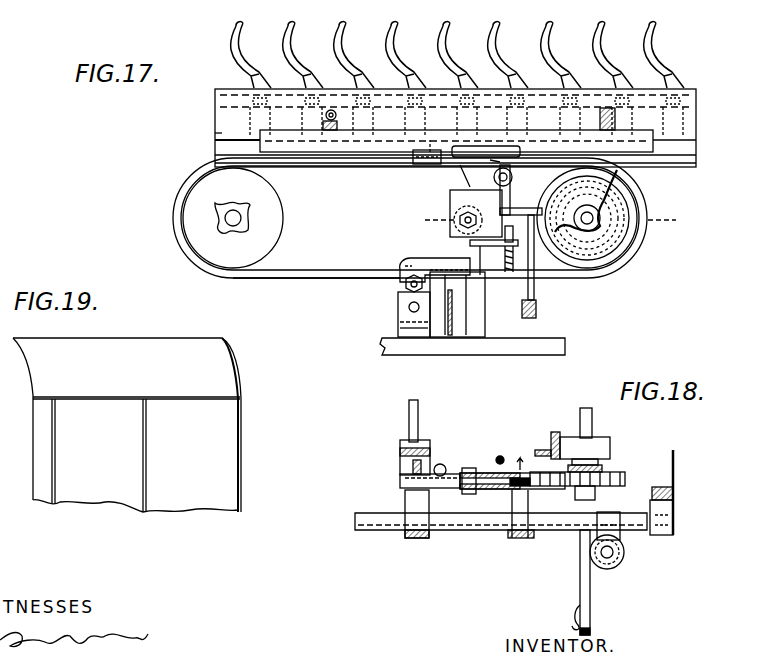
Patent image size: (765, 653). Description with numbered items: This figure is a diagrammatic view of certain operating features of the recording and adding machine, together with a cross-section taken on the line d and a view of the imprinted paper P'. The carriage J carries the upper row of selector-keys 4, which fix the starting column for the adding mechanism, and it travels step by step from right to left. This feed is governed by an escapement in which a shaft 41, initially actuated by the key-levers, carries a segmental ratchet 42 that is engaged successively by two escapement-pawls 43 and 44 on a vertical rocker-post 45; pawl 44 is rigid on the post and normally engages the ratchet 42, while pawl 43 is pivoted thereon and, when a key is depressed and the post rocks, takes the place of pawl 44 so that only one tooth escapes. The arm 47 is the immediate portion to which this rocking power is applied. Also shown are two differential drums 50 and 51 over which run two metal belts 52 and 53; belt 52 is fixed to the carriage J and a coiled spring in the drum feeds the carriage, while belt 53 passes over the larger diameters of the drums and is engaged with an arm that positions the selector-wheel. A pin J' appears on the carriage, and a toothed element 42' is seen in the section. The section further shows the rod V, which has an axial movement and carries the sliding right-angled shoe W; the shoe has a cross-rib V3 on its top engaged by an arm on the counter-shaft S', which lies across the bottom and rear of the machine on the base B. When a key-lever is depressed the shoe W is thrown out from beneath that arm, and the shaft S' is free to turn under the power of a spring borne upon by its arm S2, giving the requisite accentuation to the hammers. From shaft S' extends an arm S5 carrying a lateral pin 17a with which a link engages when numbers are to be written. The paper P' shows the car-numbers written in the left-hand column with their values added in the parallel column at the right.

In FIG. 17, the selector-keys 4 is at (237, 48).
In FIG. 17, the carriage J is at (205, 138).
In FIG. 17, the pin on frame J' is at (340, 121).
In FIG. 17, the metal belt 52 is at (418, 168).
In FIG. 17, the metal belt 53 is at (316, 291).
In FIG. 17, the differential drum 51 is at (292, 226).
In FIG. 17, the section line d is at (549, 220).
In FIG. 17, the segmental ratchet 42 is at (607, 218).
In FIG. 17, the shaft 41 is at (600, 228).
In FIG. 18, the shaft 41 is at (592, 420).
In FIG. 17, the differential drum 50 is at (630, 258).
In FIG. 17, the escapement-pawl 44 is at (496, 201).
In FIG. 17, the escapement-pawl 43 is at (510, 185).
In FIG. 18, the escapement-pawl 43 is at (521, 466).
In FIG. 17, the vertical rocker-post 45 is at (470, 248).
In FIG. 18, the vertical rocker-post 45 is at (482, 472).
In FIG. 17, the arm 47 is at (436, 275).
In FIG. 18, the arm 47 is at (432, 484).
In FIG. 17, the rod V is at (408, 310).
In FIG. 18, the rod V is at (420, 405).
In FIG. 17, the sliding right-angled shoe W is at (398, 324).
In FIG. 18, the sliding right-angled shoe W is at (400, 450).
In FIG. 17, the base B is at (566, 346).
In FIG. 18, the base B is at (656, 492).
In FIG. 19, the paper P' is at (129, 420).
In FIG. 18, the counter-shaft S' is at (501, 524).
In FIG. 18, the cross-rib V3 is at (400, 478).
In FIG. 18, the gear 42' is at (577, 488).
In FIG. 18, the arm S2 is at (625, 550).
In FIG. 18, the arm S5 is at (578, 573).
In FIG. 18, the lateral pin 17a is at (564, 614).